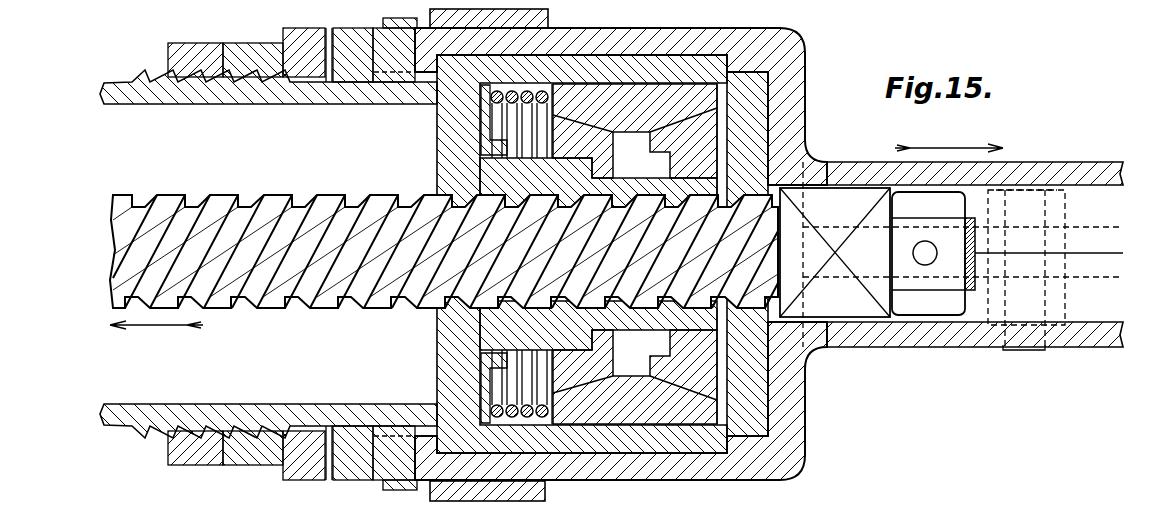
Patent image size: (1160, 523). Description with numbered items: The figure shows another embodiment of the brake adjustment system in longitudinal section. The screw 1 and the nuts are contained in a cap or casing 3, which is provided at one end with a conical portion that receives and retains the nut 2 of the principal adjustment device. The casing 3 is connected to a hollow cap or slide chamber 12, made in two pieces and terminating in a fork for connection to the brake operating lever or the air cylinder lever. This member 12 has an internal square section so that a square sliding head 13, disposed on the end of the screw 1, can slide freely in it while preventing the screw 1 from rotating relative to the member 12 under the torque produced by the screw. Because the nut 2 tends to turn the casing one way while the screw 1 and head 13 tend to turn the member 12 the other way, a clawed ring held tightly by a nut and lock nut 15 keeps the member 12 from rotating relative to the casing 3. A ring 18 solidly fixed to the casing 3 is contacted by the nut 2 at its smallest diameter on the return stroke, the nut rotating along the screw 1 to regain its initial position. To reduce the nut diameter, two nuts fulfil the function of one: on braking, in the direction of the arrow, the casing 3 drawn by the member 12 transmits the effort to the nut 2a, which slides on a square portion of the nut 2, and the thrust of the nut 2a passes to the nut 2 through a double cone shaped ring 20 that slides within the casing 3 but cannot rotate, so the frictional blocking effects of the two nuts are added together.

The screw 1 is at (395, 268).
The nut 2 is at (690, 153).
The nut 2a is at (583, 155).
The casing 3 is at (452, 91).
The hollow cap or slide chamber 12 is at (1110, 178).
The square sliding head 13 is at (843, 302).
The nut and lock nut 15 is at (312, 36).
The ring 18 is at (750, 413).
The double cone shaped ring 20 is at (647, 112).